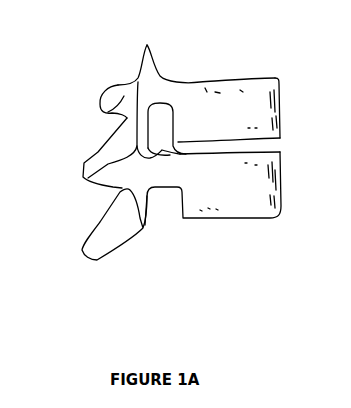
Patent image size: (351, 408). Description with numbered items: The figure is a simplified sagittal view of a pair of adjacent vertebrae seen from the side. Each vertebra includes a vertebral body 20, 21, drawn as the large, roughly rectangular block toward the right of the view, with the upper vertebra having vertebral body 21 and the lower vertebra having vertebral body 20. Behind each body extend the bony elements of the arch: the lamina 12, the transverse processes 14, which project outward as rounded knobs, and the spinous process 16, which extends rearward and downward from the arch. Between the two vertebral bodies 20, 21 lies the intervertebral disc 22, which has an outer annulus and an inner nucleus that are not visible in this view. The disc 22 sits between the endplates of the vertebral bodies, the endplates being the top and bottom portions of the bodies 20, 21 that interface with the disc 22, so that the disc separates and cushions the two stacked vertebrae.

The lamina 12 is at (154, 110).
The transverse processes 14 is at (97, 107).
The spinous process 16 is at (82, 163).
The vertebral body 20 is at (230, 210).
The vertebral body 21 is at (225, 78).
The intervertebral disc 22 is at (279, 143).